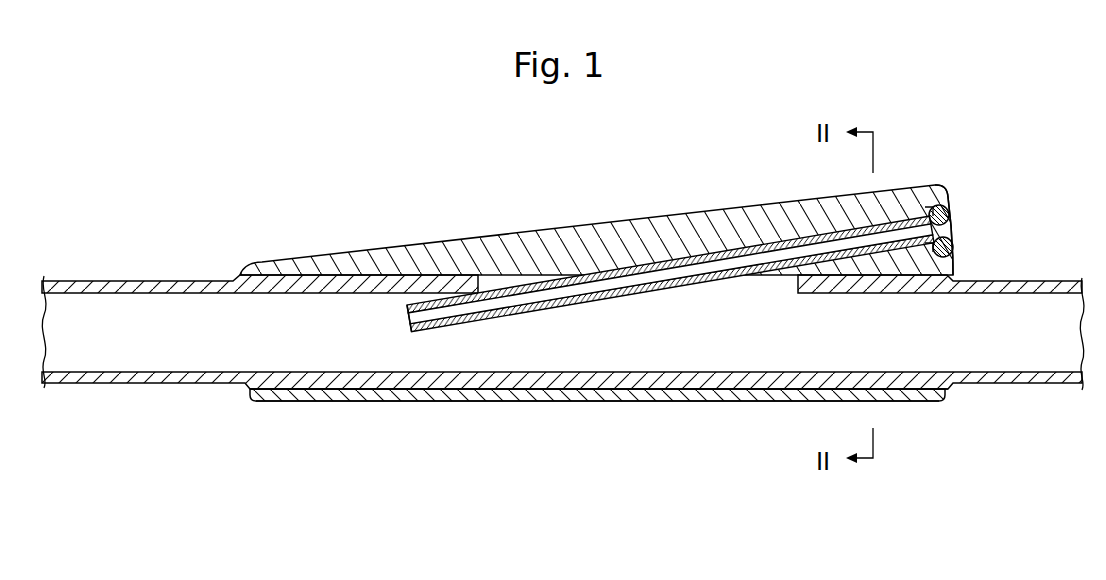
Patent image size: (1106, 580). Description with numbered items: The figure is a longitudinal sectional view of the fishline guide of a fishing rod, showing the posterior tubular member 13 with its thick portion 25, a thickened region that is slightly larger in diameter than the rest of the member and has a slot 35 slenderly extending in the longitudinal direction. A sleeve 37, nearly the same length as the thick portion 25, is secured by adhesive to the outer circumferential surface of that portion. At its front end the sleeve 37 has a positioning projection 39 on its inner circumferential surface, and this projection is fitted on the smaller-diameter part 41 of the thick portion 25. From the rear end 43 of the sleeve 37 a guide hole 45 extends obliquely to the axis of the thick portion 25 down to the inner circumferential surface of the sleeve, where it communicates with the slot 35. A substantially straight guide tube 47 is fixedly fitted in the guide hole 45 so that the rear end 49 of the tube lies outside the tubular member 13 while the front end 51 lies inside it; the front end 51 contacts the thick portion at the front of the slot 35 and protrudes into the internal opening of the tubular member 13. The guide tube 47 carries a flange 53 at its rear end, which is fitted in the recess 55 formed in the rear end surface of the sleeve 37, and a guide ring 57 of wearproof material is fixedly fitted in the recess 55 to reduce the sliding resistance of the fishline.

The posterior tubular member 13 is at (88, 280).
The thick portion 25 is at (633, 402).
The slot 35 is at (783, 287).
The sleeve 37 is at (350, 260).
The positioning projection 39 is at (352, 395).
The smaller-diameter part 41 is at (288, 378).
The rear end of the sleeve 43 is at (937, 185).
The guide hole 45 is at (707, 270).
The guide tube 47 is at (558, 297).
The rear end of the guide tube 49 is at (907, 222).
The front end of the guide tube 51 is at (430, 333).
The flange 53 is at (950, 228).
The recess 55 is at (942, 212).
The guide ring 57 is at (953, 245).